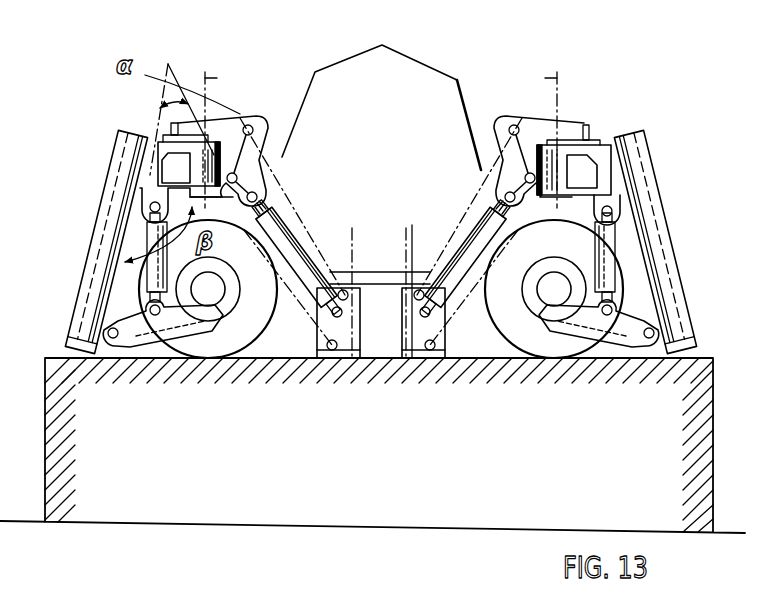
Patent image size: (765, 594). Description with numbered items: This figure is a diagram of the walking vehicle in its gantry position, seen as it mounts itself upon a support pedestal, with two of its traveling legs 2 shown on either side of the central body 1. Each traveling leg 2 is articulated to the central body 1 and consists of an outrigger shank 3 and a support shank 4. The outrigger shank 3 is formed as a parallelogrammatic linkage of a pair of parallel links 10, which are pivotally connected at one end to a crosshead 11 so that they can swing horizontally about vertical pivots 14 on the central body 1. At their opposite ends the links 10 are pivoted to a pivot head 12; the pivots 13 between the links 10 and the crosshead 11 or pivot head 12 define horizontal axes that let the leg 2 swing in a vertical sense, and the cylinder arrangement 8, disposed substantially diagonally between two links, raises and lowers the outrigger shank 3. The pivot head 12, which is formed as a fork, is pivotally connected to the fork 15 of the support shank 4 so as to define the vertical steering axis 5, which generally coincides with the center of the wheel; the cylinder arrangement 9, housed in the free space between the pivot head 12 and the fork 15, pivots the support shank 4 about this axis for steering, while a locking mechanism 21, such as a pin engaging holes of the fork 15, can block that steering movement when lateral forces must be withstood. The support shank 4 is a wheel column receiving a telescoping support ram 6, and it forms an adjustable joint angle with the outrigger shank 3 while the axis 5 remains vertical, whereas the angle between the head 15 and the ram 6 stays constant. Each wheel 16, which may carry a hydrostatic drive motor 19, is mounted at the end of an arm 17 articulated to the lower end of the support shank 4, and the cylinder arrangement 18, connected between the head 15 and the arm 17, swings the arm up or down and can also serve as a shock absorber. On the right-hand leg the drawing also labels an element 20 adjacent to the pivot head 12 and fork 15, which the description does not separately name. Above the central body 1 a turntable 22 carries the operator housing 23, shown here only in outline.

The central body 1 is at (385, 354).
The traveling leg 2 is at (288, 185).
The outrigger shank 3 is at (309, 309).
The support shank 4 is at (96, 194).
The vertical axis 5 is at (381, 138).
The telescoping support ram 6 is at (73, 300).
The cylinder arrangement 8 is at (445, 293).
The cylinder arrangement 9 is at (567, 178).
The parallel links 10 is at (455, 222).
The crosshead 11 is at (367, 342).
The pivot head 12 is at (249, 118).
The pivots 13 is at (235, 176).
The vertical pivots 14 is at (352, 230).
The fork 15 is at (148, 170).
The wheel 16 is at (217, 352).
The arm 17 is at (141, 348).
The cylinder arrangement 18 is at (148, 242).
The hydrostatic drive motor 19 is at (540, 297).
The clamping housing 20 is at (604, 165).
The locking mechanism 21 is at (590, 134).
The turntable 22 is at (392, 272).
The operator housing 23 is at (397, 58).